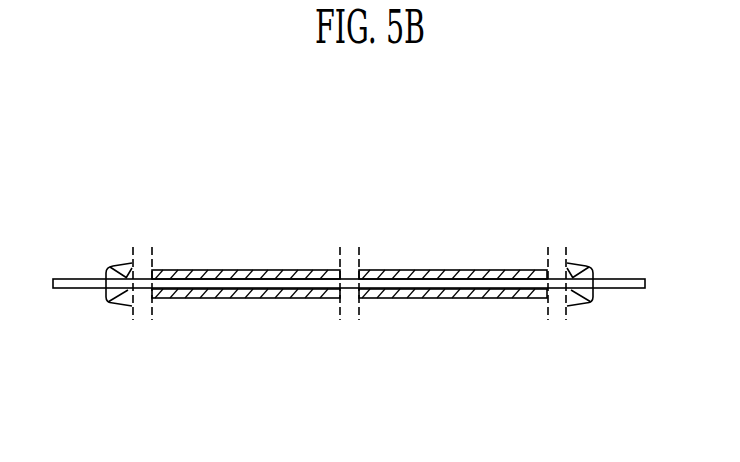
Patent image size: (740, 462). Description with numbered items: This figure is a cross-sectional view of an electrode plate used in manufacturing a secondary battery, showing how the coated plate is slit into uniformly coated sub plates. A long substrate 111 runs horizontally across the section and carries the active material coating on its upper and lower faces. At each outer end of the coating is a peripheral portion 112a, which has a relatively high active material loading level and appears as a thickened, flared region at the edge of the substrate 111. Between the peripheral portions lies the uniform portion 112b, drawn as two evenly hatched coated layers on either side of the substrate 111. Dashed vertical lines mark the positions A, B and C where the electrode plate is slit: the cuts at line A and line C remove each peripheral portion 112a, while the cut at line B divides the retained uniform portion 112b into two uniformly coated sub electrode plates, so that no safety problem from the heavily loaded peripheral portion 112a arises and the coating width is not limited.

The substrate 111 is at (77, 287).
The peripheral portion 112a is at (118, 265).
The uniform portion 112b is at (277, 271).
The slitting line A is at (142, 317).
The slitting line B is at (350, 315).
The slitting line C is at (558, 317).